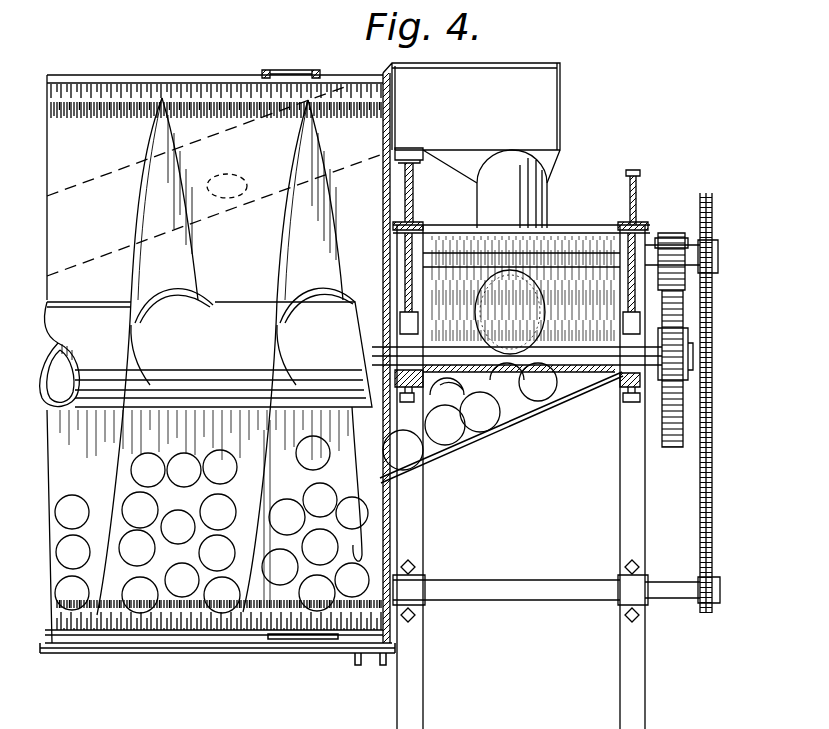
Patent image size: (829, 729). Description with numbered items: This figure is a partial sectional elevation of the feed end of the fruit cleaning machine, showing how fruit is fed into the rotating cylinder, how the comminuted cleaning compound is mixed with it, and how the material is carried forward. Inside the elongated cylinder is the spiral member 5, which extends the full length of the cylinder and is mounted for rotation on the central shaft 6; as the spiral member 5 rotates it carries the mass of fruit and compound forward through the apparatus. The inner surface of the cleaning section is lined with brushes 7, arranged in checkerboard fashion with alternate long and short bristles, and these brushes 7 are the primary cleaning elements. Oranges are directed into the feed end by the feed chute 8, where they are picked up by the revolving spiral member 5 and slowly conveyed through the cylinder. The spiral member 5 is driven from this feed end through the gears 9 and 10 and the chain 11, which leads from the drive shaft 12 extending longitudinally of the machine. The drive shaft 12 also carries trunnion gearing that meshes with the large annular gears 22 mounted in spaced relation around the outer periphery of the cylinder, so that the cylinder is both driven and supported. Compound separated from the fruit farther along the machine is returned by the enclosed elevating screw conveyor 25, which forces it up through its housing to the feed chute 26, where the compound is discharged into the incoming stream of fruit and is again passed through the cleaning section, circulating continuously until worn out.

The spiral member 5 is at (229, 356).
The central shaft 6 is at (374, 345).
The brushes 7 is at (158, 630).
The feed chute 8 is at (493, 435).
The gear 9 is at (675, 447).
The gear 10 is at (668, 237).
The chain 11 is at (712, 312).
The drive shaft 12 is at (485, 595).
The annular gears 22 is at (290, 76).
The elevating screw conveyor 25 is at (227, 186).
The feed chute 26 is at (530, 210).